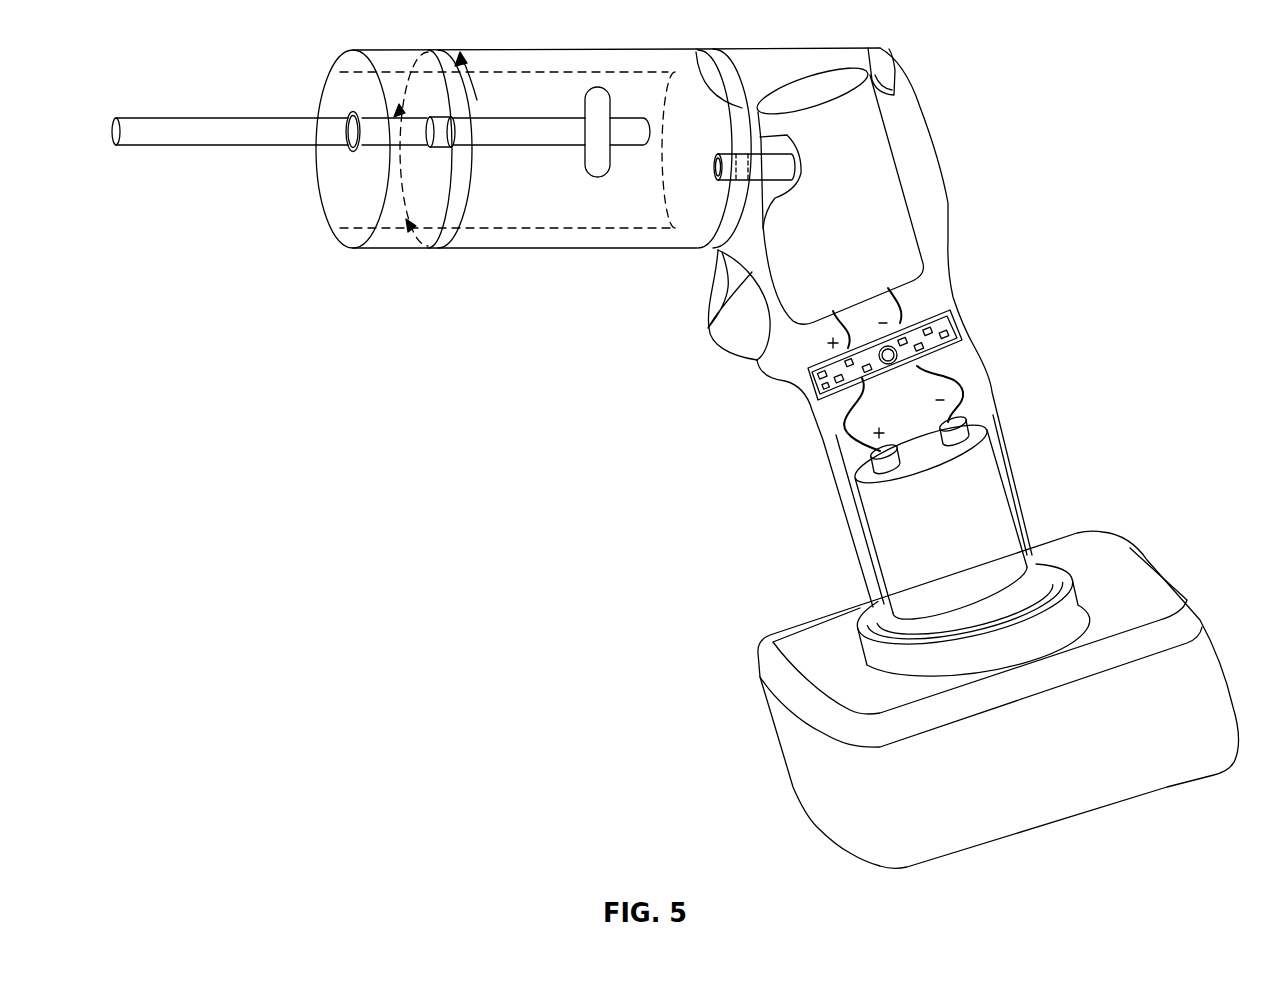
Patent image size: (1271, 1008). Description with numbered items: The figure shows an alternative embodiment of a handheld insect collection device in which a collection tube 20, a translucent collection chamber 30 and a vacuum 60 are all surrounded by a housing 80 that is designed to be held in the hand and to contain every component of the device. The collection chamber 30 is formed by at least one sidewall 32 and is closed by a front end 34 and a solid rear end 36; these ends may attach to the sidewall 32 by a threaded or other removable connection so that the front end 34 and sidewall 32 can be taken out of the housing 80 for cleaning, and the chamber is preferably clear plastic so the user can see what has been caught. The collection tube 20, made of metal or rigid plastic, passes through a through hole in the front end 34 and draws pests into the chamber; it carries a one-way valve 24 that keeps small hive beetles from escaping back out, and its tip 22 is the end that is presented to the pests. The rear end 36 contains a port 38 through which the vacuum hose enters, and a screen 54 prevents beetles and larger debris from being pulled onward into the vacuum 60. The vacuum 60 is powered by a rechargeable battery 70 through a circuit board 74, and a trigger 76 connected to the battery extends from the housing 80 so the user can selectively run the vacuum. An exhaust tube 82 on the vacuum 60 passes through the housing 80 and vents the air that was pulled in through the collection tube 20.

The collection tube 20 is at (248, 133).
The shaft tip 22 is at (118, 117).
The one-way valve 24 is at (592, 155).
The collection chamber 30 is at (528, 250).
The sidewall 32 is at (572, 65).
The front end 34 is at (340, 73).
The rear end 36 is at (742, 148).
The port 38 is at (735, 145).
The screen 54 is at (717, 168).
The vacuum 60 is at (890, 207).
The battery 70 is at (993, 490).
The circuit board 74 is at (965, 332).
The trigger 76 is at (708, 328).
The housing 80 is at (955, 240).
The exhaust tube 82 is at (873, 46).